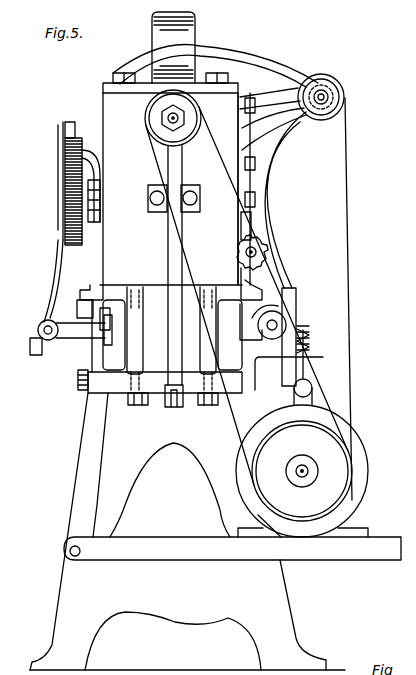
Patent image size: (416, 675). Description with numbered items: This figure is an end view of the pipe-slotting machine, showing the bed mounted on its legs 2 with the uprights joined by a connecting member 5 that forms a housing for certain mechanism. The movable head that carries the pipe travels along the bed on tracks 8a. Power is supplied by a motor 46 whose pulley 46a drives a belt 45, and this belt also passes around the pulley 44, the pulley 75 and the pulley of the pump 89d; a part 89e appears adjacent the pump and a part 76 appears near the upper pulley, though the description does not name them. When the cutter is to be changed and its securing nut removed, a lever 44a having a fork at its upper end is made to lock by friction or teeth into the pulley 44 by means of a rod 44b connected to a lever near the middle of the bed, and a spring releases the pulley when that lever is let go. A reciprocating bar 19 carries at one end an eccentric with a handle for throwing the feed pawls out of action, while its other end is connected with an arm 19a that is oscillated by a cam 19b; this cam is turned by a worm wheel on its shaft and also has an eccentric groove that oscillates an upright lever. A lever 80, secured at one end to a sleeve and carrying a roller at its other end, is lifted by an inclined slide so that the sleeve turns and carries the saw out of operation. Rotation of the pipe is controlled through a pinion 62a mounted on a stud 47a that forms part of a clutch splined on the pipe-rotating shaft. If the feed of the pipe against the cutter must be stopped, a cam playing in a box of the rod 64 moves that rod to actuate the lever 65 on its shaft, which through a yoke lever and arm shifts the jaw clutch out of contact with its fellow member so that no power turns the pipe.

The legs 2 is at (68, 573).
The connecting member 5 is at (196, 32).
The tracks 8a is at (103, 283).
The reciprocating bar 19 is at (35, 338).
The arm 19a is at (58, 231).
The cam 19b is at (63, 155).
The pulley 44 is at (150, 122).
The lever 44a is at (170, 258).
The rod 44b is at (175, 408).
The belt 45 is at (349, 270).
The motor 46 is at (369, 470).
The motor pulley 46a is at (325, 440).
The stud 47a is at (246, 252).
The pinion 62a is at (263, 251).
The rod 64 is at (77, 306).
The lever 65 is at (80, 343).
The pulley 75 is at (333, 94).
The bracket 76 is at (340, 110).
The lever 80 is at (268, 54).
The pump 89d is at (290, 291).
The bracket 89e is at (289, 365).